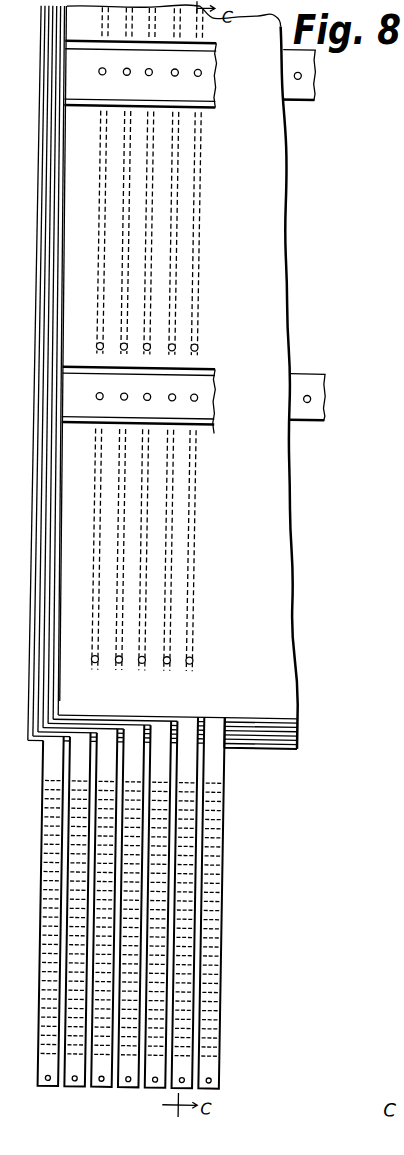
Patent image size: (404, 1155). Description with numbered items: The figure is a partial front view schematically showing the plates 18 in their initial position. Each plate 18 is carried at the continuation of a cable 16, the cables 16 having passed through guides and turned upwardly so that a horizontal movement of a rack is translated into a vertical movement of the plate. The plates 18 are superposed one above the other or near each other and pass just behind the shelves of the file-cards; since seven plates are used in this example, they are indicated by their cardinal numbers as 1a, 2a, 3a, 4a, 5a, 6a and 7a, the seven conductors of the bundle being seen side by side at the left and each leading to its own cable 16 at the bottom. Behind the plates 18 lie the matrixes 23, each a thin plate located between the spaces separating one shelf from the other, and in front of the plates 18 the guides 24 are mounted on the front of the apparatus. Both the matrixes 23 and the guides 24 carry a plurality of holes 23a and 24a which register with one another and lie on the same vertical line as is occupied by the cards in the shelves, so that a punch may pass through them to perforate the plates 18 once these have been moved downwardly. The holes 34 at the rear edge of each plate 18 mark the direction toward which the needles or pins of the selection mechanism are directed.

The conductor strip 1a is at (64, 282).
The conductor strip 2a is at (61, 263).
The conductor strip 3a is at (57, 245).
The conductor strip 4a is at (53, 226).
The conductor strip 5a is at (49, 208).
The conductor strip 6a is at (45, 188).
The conductor strip 7a is at (41, 170).
The cable 16 is at (223, 810).
The plate 18 is at (157, 377).
The matrix 23 is at (313, 93).
The hole 23a is at (303, 71).
The guide 24 is at (202, 50).
The hole 24a is at (203, 70).
The hole 34 is at (202, 655).